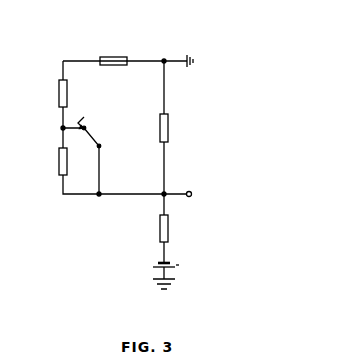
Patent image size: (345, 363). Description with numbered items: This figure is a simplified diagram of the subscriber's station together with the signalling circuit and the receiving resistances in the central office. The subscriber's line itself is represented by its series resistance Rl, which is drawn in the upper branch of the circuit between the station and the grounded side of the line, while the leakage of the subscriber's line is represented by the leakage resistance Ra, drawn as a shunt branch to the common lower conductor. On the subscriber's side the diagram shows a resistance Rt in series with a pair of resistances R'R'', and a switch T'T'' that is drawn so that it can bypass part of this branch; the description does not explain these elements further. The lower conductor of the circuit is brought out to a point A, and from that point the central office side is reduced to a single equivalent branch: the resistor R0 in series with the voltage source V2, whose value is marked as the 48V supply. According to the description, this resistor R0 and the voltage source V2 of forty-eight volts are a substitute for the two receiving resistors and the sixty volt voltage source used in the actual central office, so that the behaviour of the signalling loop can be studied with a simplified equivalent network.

The resistance of the subscriber's line Rl is at (113, 52).
The resistor Rt is at (49, 93).
The selectable resistors R' and R'' R'R'' is at (46, 161).
The switch T'/T'' T'T'' is at (94, 155).
The leakage resistance of the subscriber's line Ra is at (174, 128).
The terminal A is at (189, 188).
The substitute resistor R0 is at (153, 228).
The voltage source V2 is at (154, 268).
The forty-eight volt value 48V is at (191, 267).